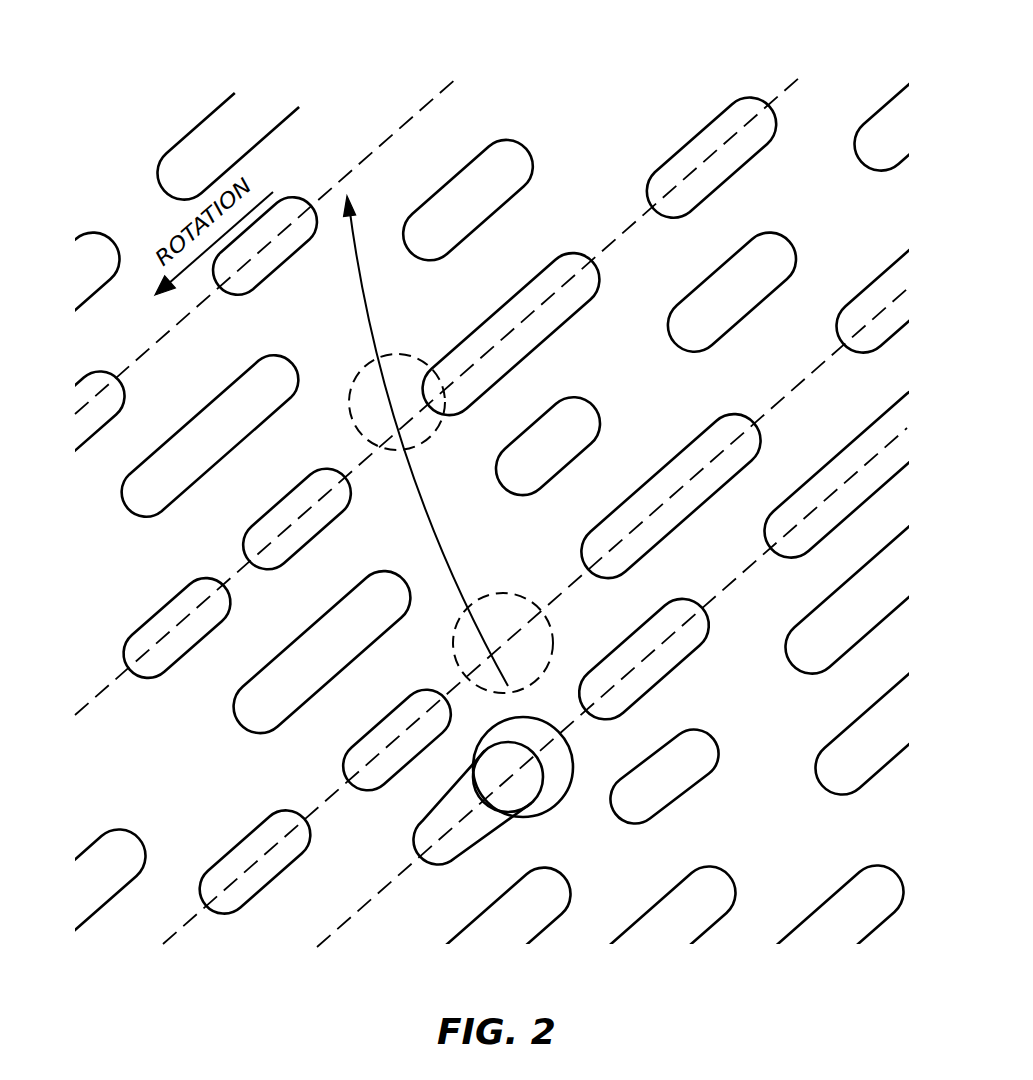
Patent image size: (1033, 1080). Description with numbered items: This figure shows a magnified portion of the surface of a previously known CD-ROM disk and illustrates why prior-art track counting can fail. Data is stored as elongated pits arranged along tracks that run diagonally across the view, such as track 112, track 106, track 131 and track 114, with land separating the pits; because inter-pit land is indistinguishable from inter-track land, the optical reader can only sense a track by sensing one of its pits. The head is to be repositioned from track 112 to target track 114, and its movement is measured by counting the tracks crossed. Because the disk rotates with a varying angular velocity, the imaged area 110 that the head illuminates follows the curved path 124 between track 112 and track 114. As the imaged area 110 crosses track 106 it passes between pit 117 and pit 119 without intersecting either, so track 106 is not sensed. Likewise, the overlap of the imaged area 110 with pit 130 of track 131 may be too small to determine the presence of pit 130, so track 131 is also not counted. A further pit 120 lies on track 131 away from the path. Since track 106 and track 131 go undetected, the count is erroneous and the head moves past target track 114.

The track 106 is at (567, 590).
The imaged area 110 is at (573, 767).
The track 112 is at (723, 590).
The track 114 is at (437, 97).
The pit 117 is at (345, 757).
The pit 119 is at (580, 555).
The slot 120 is at (280, 497).
The path 124 is at (432, 516).
The pit 130 is at (530, 355).
The track 131 is at (630, 225).